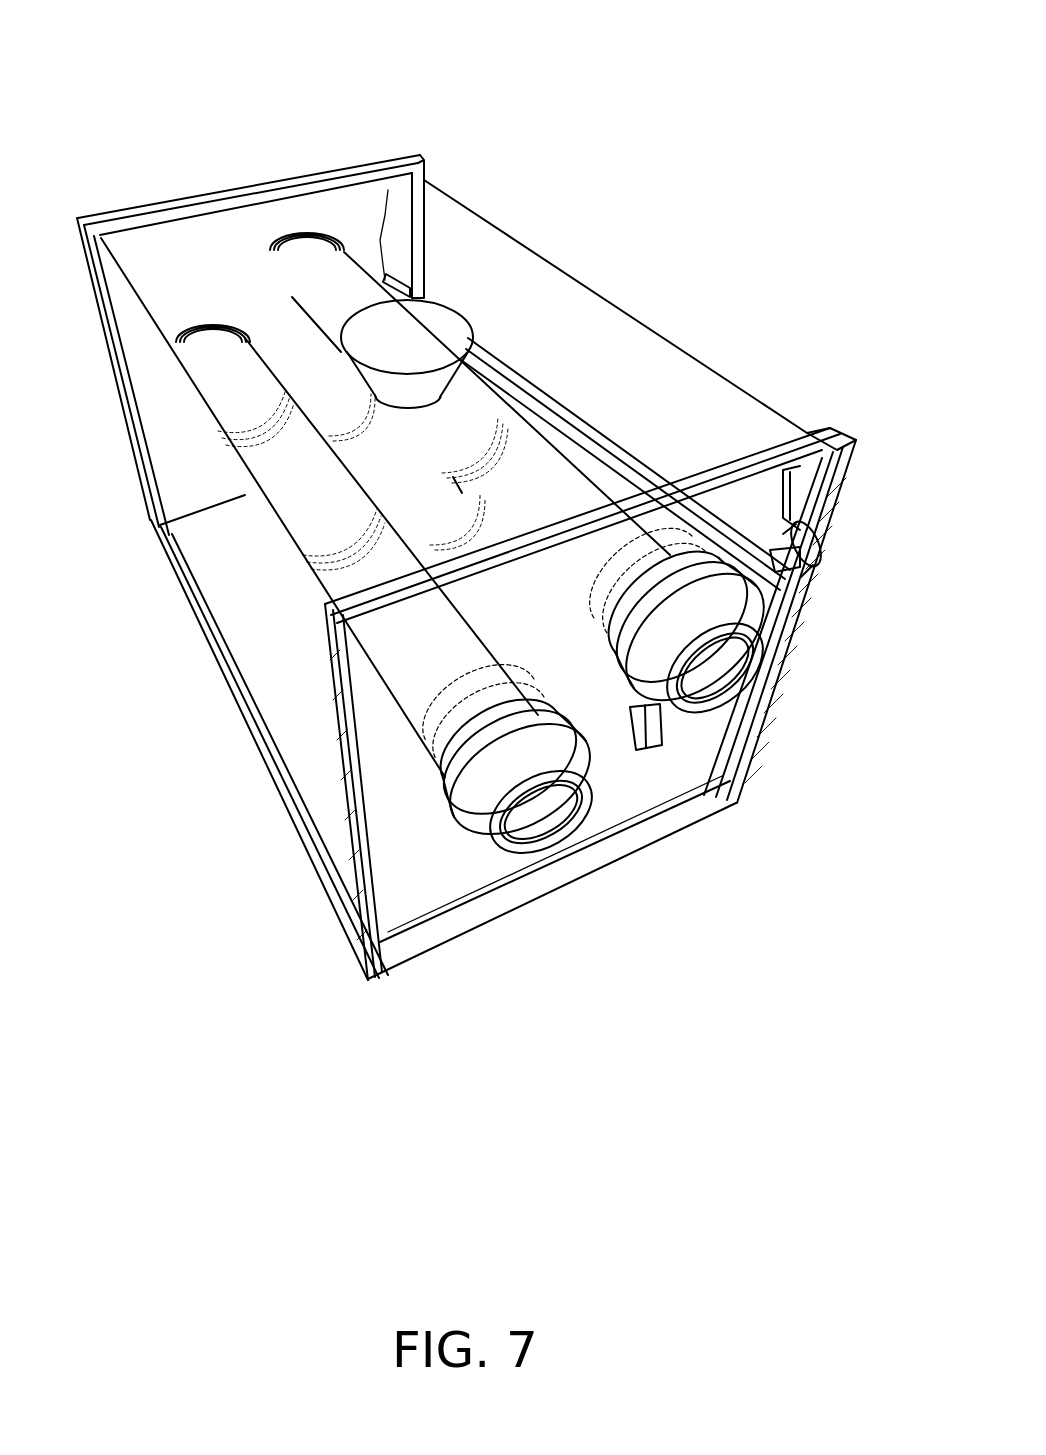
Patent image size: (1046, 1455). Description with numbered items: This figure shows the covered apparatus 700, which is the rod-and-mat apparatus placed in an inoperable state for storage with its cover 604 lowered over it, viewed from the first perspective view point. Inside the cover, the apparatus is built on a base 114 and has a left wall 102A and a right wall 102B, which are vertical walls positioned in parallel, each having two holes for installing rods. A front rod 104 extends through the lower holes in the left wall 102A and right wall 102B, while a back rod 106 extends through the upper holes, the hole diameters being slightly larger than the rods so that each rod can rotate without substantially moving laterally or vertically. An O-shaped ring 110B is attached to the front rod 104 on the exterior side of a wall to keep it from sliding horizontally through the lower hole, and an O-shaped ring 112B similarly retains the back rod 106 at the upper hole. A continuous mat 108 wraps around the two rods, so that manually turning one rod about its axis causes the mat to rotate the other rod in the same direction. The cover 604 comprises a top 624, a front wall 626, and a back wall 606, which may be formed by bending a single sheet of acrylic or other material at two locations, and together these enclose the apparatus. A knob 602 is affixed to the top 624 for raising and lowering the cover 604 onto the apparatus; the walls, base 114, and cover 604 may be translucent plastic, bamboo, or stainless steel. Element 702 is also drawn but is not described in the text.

The covered apparatus 700 is at (798, 58).
The left wall 102A is at (338, 168).
The right wall 102B is at (827, 428).
The front rod 104 is at (532, 848).
The back rod 106 is at (707, 703).
The continuous mat 108 is at (593, 710).
The O-shaped ring 110B is at (456, 817).
The O-shaped ring 112B is at (713, 577).
The base 114 is at (407, 958).
The knob 602 is at (460, 313).
The cover 604 is at (680, 318).
The back wall 606 is at (710, 428).
The top 624 is at (227, 232).
The front wall 626 is at (150, 393).
The pin 702 is at (806, 562).